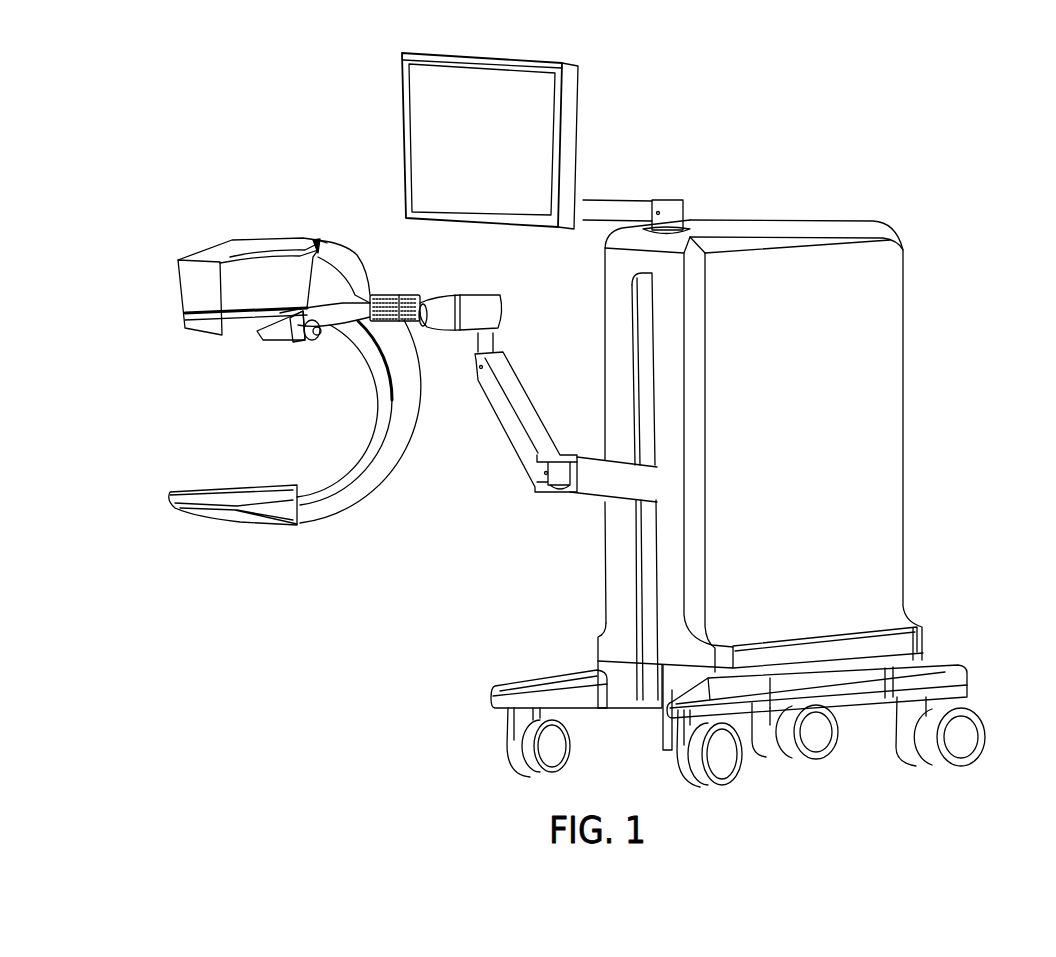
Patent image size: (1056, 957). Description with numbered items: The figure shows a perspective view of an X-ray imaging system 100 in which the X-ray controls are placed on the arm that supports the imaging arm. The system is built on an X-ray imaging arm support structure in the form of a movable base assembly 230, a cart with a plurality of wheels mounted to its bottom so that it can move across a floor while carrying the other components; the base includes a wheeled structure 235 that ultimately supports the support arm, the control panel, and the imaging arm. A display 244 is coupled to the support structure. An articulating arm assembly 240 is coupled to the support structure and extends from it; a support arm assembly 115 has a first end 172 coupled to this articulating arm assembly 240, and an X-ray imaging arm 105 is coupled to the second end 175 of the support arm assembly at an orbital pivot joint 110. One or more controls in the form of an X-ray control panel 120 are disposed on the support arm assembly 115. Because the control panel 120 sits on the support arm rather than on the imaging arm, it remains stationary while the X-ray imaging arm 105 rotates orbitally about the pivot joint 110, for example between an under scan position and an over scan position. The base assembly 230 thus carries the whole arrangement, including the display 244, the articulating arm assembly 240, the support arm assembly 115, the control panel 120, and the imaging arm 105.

The X-ray imaging system 100 is at (715, 168).
The X-ray imaging arm 105 is at (257, 280).
The orbital pivot joint 110 is at (303, 341).
The support arm assembly 115 is at (355, 305).
The X-ray control panel 120 is at (402, 291).
The first end 172 is at (441, 325).
The second end 175 is at (318, 342).
The movable base assembly 230 is at (892, 196).
The wheeled structure 235 is at (948, 649).
The articulating arm assembly 240 is at (515, 465).
The display 244 is at (501, 152).